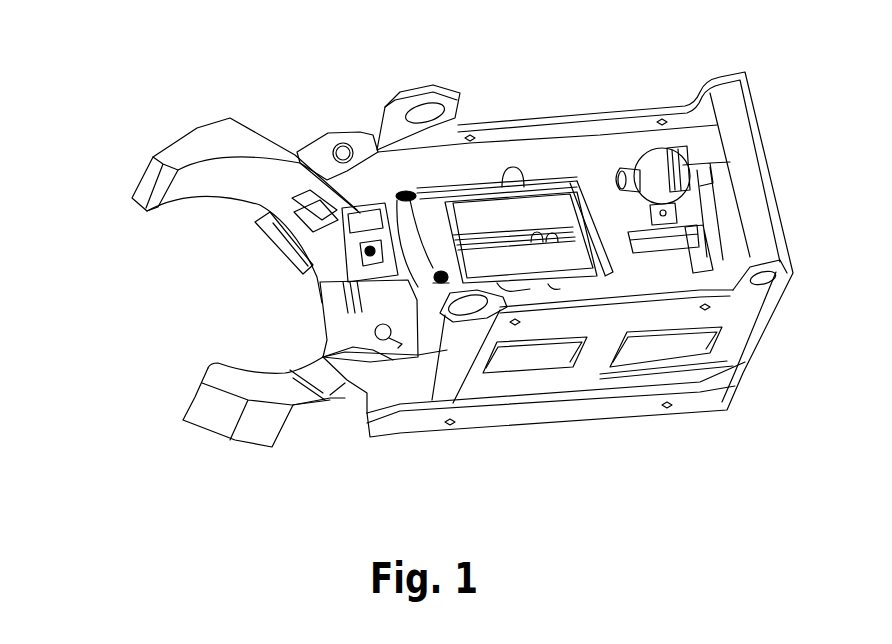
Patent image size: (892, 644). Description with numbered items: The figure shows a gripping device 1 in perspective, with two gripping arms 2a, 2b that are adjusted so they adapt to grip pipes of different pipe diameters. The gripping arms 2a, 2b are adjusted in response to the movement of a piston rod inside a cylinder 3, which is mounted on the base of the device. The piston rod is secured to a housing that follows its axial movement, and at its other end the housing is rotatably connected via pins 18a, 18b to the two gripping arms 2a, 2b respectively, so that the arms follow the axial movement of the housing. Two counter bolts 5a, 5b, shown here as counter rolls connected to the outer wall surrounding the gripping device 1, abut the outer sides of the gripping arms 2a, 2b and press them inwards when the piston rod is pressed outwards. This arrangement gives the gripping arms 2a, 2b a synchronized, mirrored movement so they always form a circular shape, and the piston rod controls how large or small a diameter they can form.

The gripping device 1 is at (143, 82).
The gripping arm 2a is at (167, 207).
The gripping arm 2b is at (196, 400).
The cylinder 3 is at (521, 262).
The counter bolt 5a is at (336, 146).
The counter bolt 5b is at (364, 372).
The pin 18a is at (407, 195).
The pin 18b is at (434, 290).